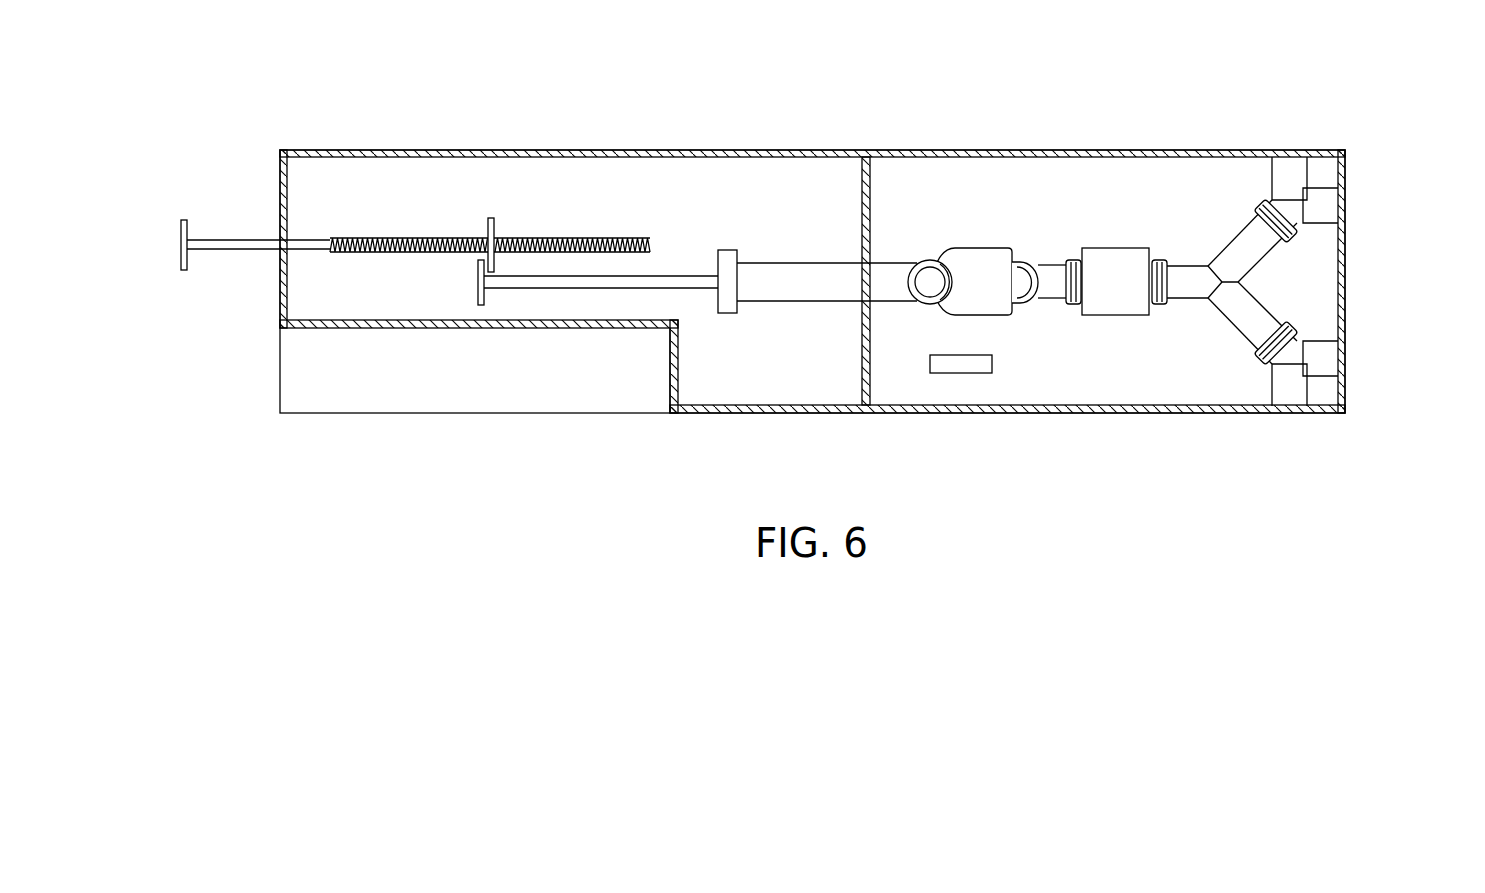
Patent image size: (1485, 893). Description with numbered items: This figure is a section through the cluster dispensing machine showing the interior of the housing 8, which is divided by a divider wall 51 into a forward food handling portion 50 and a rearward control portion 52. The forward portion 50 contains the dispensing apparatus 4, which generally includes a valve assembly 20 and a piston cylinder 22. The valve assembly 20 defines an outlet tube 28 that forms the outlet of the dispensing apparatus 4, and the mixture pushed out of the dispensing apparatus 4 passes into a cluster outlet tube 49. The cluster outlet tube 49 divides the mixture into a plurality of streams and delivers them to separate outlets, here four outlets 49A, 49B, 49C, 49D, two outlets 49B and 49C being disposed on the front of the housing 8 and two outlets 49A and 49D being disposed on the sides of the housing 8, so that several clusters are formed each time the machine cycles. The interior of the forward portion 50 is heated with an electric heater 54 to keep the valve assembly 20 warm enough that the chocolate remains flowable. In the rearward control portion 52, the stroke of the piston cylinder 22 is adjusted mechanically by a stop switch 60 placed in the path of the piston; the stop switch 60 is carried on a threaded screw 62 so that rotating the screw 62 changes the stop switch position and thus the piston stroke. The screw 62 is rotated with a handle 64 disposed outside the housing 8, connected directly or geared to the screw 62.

The housing 8 is at (337, 143).
The dispensing apparatus 4 is at (1064, 246).
The valve assembly 20 is at (1053, 297).
The piston cylinder 22 is at (795, 263).
The outlet tube 28 is at (1190, 293).
The cluster outlet tube 49 is at (1232, 217).
The outlet 49A is at (1289, 161).
The outlet 49B is at (1333, 207).
The outlet 49C is at (1333, 358).
The outlet 49D is at (1289, 403).
The forward food handling portion 50 is at (961, 401).
The divider wall 51 is at (871, 208).
The rearward control portion 52 is at (303, 196).
The electric heater 54 is at (930, 364).
The stop switch 60 is at (496, 222).
The threaded screw 62 is at (404, 238).
The handle 64 is at (184, 272).